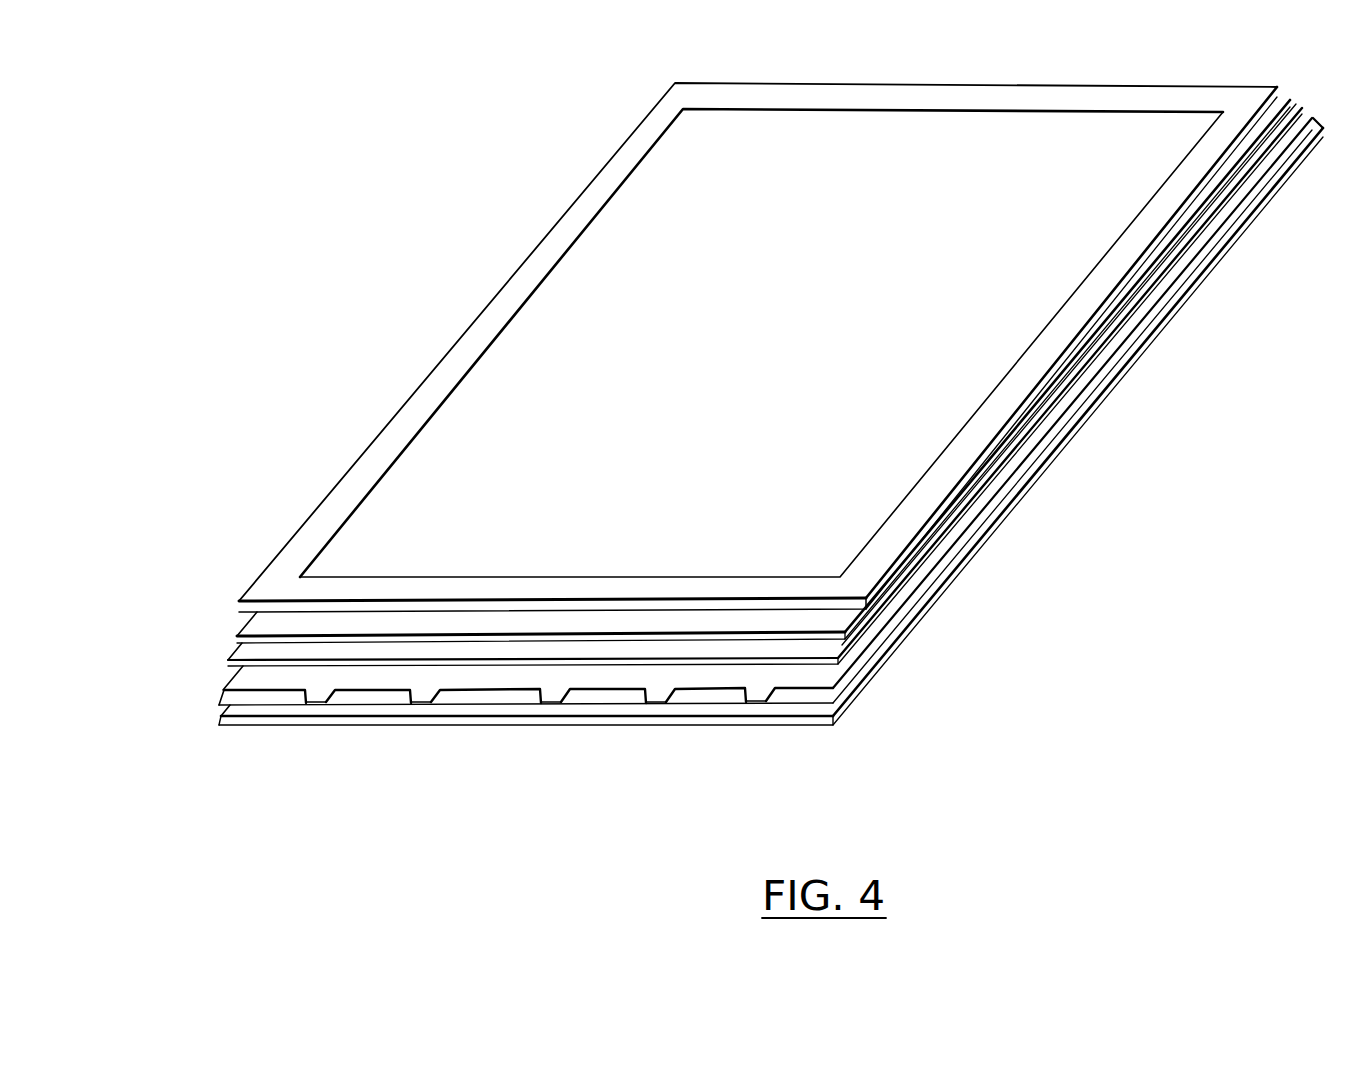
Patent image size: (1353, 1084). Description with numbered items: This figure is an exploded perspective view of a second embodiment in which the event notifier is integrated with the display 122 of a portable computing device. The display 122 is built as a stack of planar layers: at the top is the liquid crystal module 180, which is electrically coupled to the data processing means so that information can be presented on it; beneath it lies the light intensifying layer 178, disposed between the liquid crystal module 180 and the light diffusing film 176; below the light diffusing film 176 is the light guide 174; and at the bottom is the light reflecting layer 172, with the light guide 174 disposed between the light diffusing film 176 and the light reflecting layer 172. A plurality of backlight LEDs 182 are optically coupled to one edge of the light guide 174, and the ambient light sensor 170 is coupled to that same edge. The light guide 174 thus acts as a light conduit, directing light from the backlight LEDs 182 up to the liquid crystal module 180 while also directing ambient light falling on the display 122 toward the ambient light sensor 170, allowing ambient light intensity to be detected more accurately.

The display 122 is at (272, 208).
The liquid crystal module 180 is at (305, 523).
The light intensifying layer 178 is at (237, 634).
The light diffusing film 176 is at (228, 661).
The light guide 174 is at (870, 632).
The ambient light sensor 170 is at (548, 707).
The backlight LEDs 182 is at (410, 730).
The light reflecting layer 172 is at (848, 681).